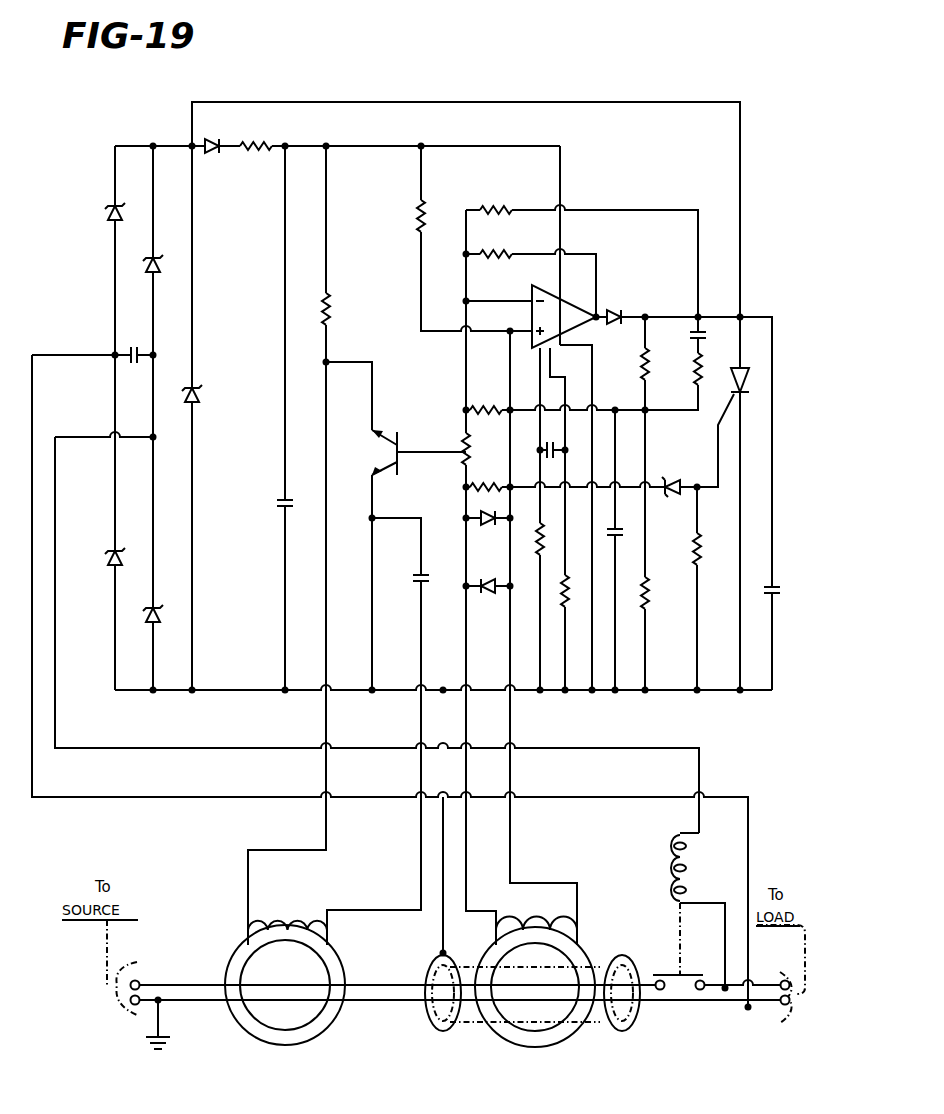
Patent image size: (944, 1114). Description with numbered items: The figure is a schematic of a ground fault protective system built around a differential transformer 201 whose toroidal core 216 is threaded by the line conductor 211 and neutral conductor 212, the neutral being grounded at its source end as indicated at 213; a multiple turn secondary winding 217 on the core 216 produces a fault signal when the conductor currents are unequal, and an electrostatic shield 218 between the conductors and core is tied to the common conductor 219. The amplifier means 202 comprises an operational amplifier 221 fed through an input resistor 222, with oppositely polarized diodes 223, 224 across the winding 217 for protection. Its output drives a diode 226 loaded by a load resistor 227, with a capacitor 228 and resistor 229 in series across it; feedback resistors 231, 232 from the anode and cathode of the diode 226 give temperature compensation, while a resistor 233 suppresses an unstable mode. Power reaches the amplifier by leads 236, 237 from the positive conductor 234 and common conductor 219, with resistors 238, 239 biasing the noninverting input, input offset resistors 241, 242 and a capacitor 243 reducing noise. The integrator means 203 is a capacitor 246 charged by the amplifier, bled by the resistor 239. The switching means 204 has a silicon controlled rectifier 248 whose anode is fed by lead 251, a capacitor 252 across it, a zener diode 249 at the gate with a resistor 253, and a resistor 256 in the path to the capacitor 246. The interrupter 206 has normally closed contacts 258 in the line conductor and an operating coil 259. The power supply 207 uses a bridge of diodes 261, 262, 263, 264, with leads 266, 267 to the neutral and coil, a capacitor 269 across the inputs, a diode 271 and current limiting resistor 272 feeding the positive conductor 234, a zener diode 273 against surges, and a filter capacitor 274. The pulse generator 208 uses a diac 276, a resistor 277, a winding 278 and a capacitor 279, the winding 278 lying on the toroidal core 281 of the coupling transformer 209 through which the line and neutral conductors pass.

The differential transformer 201 is at (580, 942).
The amplifier means 202 is at (587, 238).
The integrator means 203 is at (620, 502).
The switching means 204 is at (750, 375).
The interrupter 206 is at (727, 828).
The power supply 207 is at (108, 208).
The pulse generator 208 is at (363, 352).
The coupling transformer 209 is at (241, 942).
The line conductor 211 is at (208, 968).
The neutral conductor 212 is at (214, 1002).
The ground connection 213 is at (152, 1016).
The toroidal core 216 is at (520, 1038).
The secondary winding 217 is at (542, 924).
The electrostatic shield 218 is at (432, 1032).
The common conductor 219 is at (240, 686).
The operational amplifier 221 is at (572, 306).
The input resistor 222 is at (460, 456).
The diode 223 is at (488, 594).
The diode 224 is at (482, 525).
The diode 226 is at (622, 312).
The load resistor 227 is at (642, 360).
The capacitor 228 is at (704, 326).
The resistor 229 is at (706, 386).
The feedback resistor 231 is at (503, 252).
The feedback resistor 232 is at (498, 192).
The resistor 233 is at (492, 406).
The positive conductor 234 is at (394, 146).
The lead 236 is at (562, 166).
The lead 237 is at (593, 378).
The resistor 238 is at (418, 216).
The resistor 239 is at (650, 594).
The input offset resistor 241 is at (538, 554).
The input offset resistor 242 is at (564, 606).
The capacitor 243 is at (543, 447).
The integrator capacitor 246 is at (626, 532).
The silicon controlled rectifier 248 is at (752, 394).
The zener diode 249 is at (676, 482).
The lead 251 is at (470, 90).
The capacitor 252 is at (790, 582).
The resistor 253 is at (704, 564).
The resistor 256 is at (494, 478).
The contacts 258 is at (698, 972).
The operating coil 259 is at (686, 874).
The diode 261 is at (106, 220).
The diode 262 is at (108, 568).
The diode 263 is at (160, 262).
The diode 264 is at (160, 614).
The lead 266 is at (90, 354).
The lead 267 is at (98, 436).
The capacitor 269 is at (134, 346).
The diode 271 is at (216, 138).
The current limiting resistor 272 is at (258, 154).
The zener diode 273 is at (202, 395).
The filter capacitor 274 is at (280, 512).
The bilateral switching device 276 is at (396, 456).
The resistor 277 is at (324, 300).
The winding 278 is at (290, 926).
The capacitor 279 is at (416, 583).
The toroidal core 281 is at (351, 960).